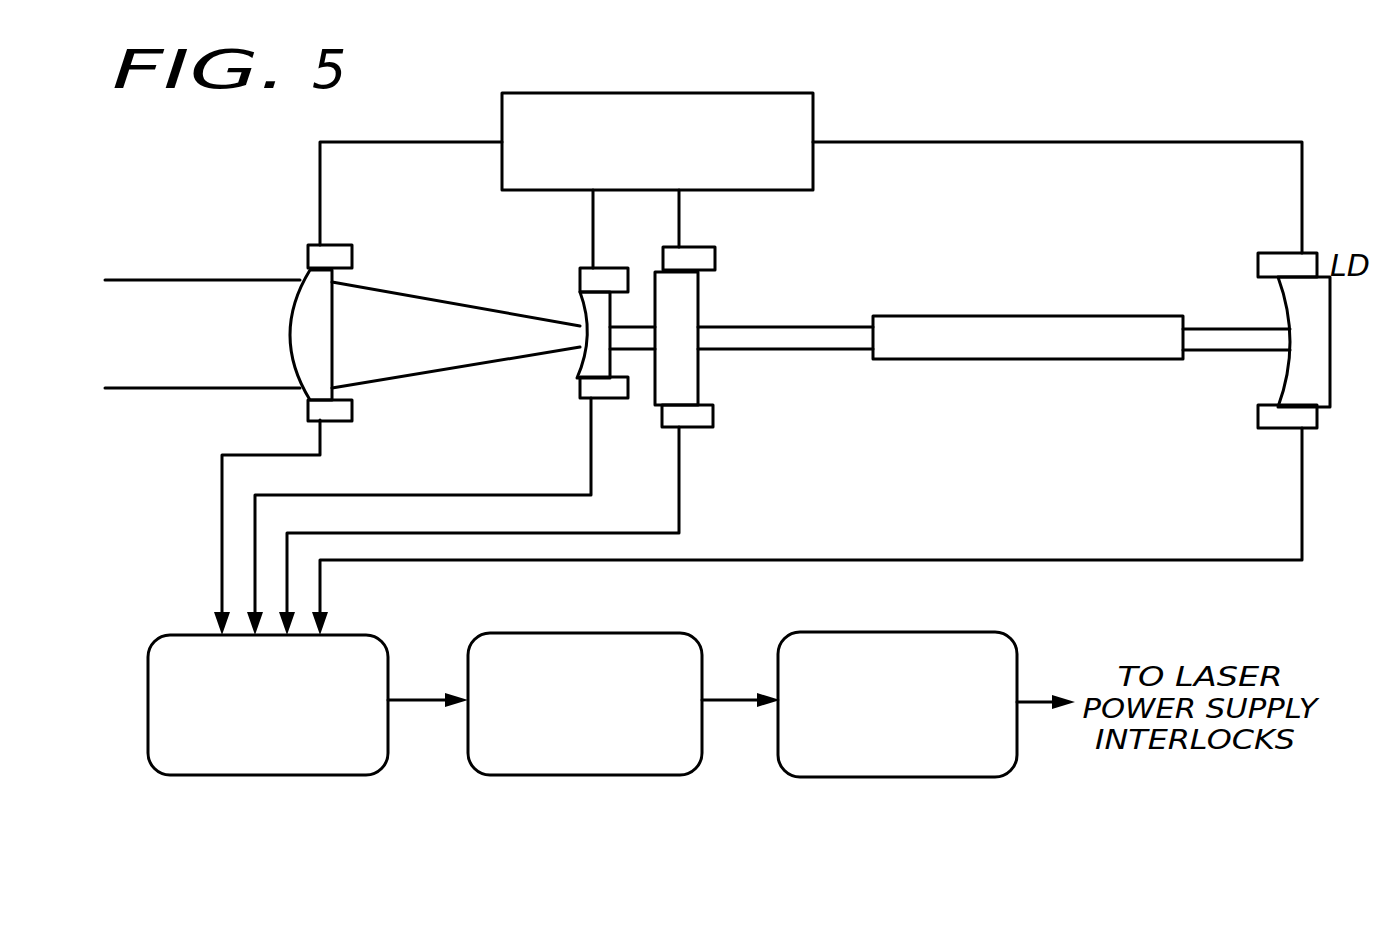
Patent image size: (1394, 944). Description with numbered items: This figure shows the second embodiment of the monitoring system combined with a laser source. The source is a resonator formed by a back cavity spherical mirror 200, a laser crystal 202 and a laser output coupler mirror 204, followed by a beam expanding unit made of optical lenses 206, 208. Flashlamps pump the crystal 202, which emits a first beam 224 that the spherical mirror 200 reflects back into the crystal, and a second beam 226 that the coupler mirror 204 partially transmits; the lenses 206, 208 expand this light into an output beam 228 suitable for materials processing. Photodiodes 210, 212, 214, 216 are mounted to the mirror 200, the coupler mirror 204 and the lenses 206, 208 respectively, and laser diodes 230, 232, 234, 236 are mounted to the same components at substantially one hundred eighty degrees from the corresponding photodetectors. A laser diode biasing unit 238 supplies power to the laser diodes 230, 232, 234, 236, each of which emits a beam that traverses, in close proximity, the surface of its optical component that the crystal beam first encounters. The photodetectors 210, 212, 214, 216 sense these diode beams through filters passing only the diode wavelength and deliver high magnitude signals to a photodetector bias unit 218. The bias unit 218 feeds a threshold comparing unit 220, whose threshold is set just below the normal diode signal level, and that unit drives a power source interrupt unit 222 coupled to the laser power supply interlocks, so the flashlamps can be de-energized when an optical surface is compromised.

The back cavity spherical mirror 200 is at (1280, 297).
The laser crystal 202 is at (968, 316).
The laser output coupler mirror 204 is at (698, 297).
The optical lens 206 is at (580, 312).
The optical lens 208 is at (345, 275).
The photodiode 210 is at (1262, 428).
The photodiode 212 is at (713, 420).
The photodiode 214 is at (578, 380).
The photodiode 216 is at (352, 413).
The photodetector bias unit 218 is at (283, 775).
The threshold comparing unit 220 is at (590, 775).
The power source interrupt unit 222 is at (885, 777).
The first beam 224 is at (1240, 352).
The second beam 226 is at (808, 350).
The beam 228 is at (186, 280).
The laser diode 230 is at (1278, 253).
The laser diode 232 is at (700, 247).
The laser diode 234 is at (580, 267).
The laser diode 236 is at (343, 232).
The laser diode biasing unit 238 is at (813, 103).